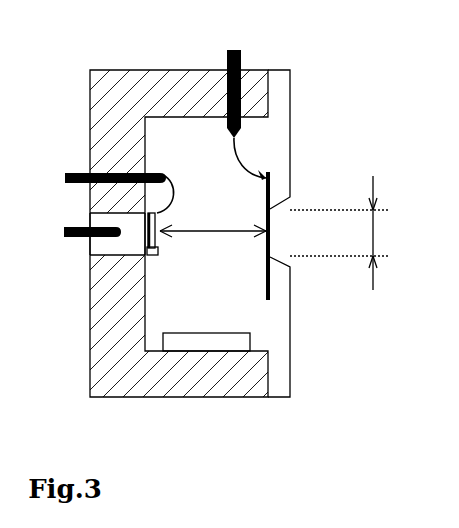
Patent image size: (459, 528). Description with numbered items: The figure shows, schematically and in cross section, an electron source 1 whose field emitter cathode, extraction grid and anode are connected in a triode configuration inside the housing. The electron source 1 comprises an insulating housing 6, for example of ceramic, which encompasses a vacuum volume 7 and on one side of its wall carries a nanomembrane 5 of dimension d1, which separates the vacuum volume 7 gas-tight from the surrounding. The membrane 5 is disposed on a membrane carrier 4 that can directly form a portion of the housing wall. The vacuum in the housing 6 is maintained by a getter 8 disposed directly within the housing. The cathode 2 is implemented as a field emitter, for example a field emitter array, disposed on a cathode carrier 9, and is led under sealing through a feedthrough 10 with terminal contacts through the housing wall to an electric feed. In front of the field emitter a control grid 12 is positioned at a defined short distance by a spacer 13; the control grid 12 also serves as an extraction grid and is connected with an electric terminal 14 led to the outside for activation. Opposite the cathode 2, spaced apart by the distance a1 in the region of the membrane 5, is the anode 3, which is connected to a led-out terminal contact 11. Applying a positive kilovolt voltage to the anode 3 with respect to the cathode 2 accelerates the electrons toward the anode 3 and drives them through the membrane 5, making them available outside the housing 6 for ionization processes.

The electron source 1 is at (308, 92).
The cathode 2 is at (147, 258).
The anode 3 is at (265, 170).
The membrane carrier 4 is at (278, 157).
The nanomembrane 5 is at (272, 238).
The insulating housing 6 is at (96, 117).
The vacuum volume 7 is at (179, 156).
The getter 8 is at (202, 333).
The cathode carrier 9 is at (103, 243).
The feedthrough 10 is at (78, 228).
The terminal contact 11 is at (242, 62).
The control grid 12 is at (158, 241).
The spacer 13 is at (157, 256).
The electric terminal 14 is at (75, 174).
The distance a1 is at (213, 222).
The membrane dimension d1 is at (386, 233).